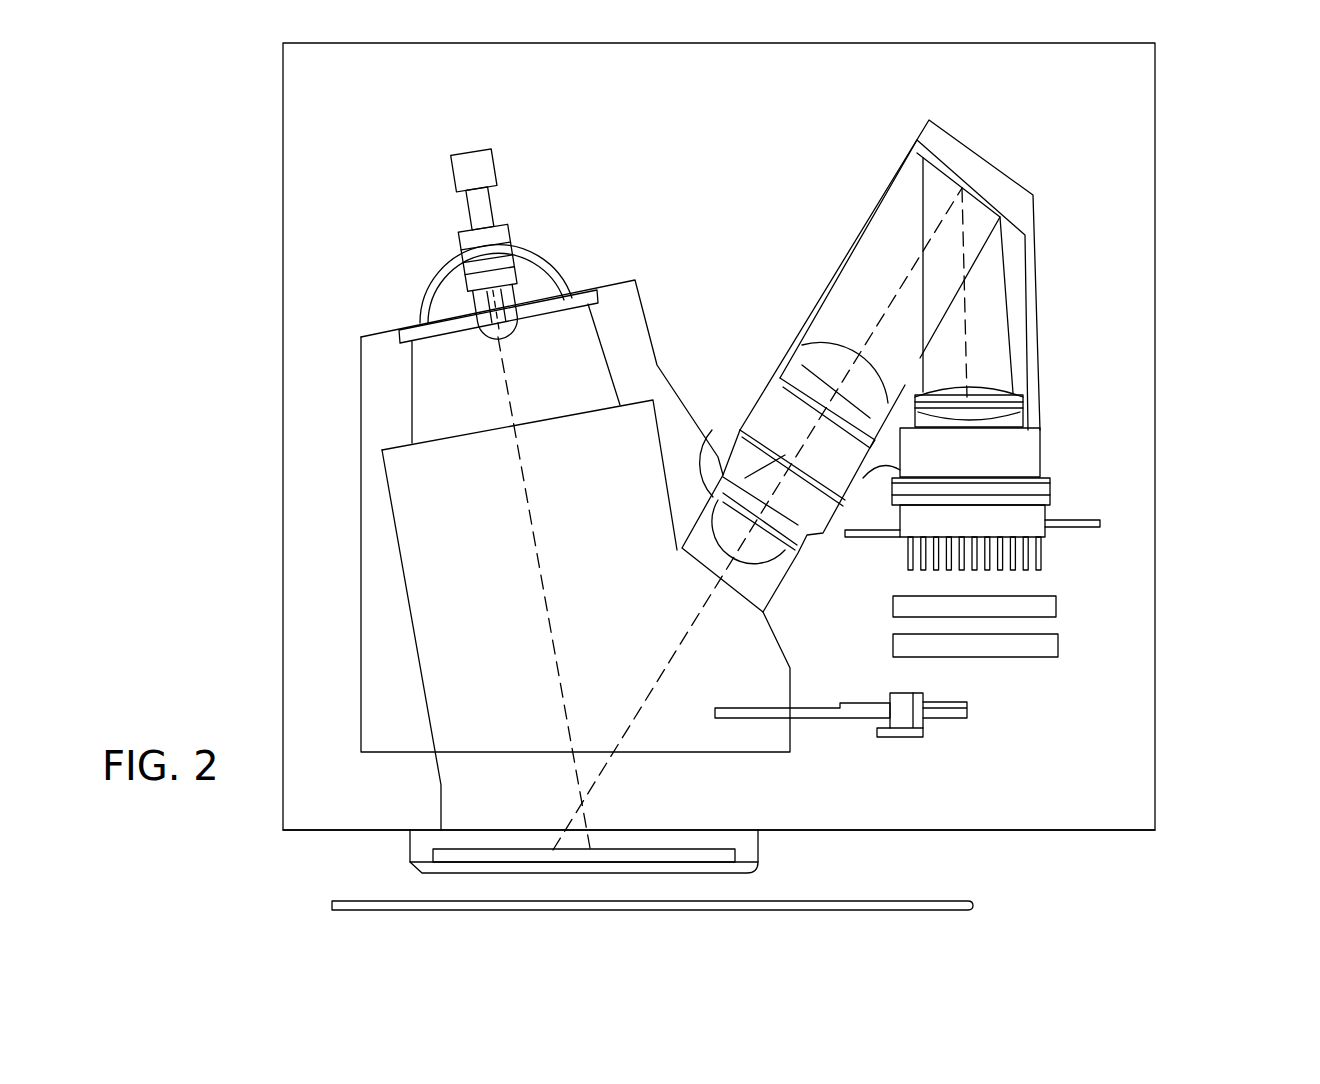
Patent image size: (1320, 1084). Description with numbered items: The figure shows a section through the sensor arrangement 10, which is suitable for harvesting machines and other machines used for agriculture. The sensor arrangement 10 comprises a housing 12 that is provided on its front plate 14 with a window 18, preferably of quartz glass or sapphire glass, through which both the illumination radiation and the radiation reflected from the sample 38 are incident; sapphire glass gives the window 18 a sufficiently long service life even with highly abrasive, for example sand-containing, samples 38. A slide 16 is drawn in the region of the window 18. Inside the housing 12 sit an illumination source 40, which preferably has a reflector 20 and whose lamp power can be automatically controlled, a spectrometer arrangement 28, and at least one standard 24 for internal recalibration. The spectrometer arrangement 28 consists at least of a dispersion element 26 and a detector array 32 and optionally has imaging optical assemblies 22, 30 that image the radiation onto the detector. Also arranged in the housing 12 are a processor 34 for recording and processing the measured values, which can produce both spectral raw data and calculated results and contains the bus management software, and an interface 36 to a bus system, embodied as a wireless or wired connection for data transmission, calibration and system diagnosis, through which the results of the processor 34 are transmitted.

The sensor arrangement 10 is at (1185, 155).
The housing 12 is at (282, 538).
The front plate 14 is at (1075, 830).
The slide 16 is at (748, 840).
The window 18 is at (447, 873).
The reflector 20 is at (417, 385).
The imaging optical assembly 22 is at (838, 358).
The standard 24 is at (955, 720).
The dispersion element 26 is at (980, 200).
The spectrometer arrangement 28 is at (940, 267).
The imaging optical assembly 30 is at (987, 390).
The detector array 32 is at (1027, 513).
The processor 34 is at (1058, 607).
The interface 36 is at (1060, 648).
The sample 38 is at (642, 905).
The illumination source 40 is at (497, 301).